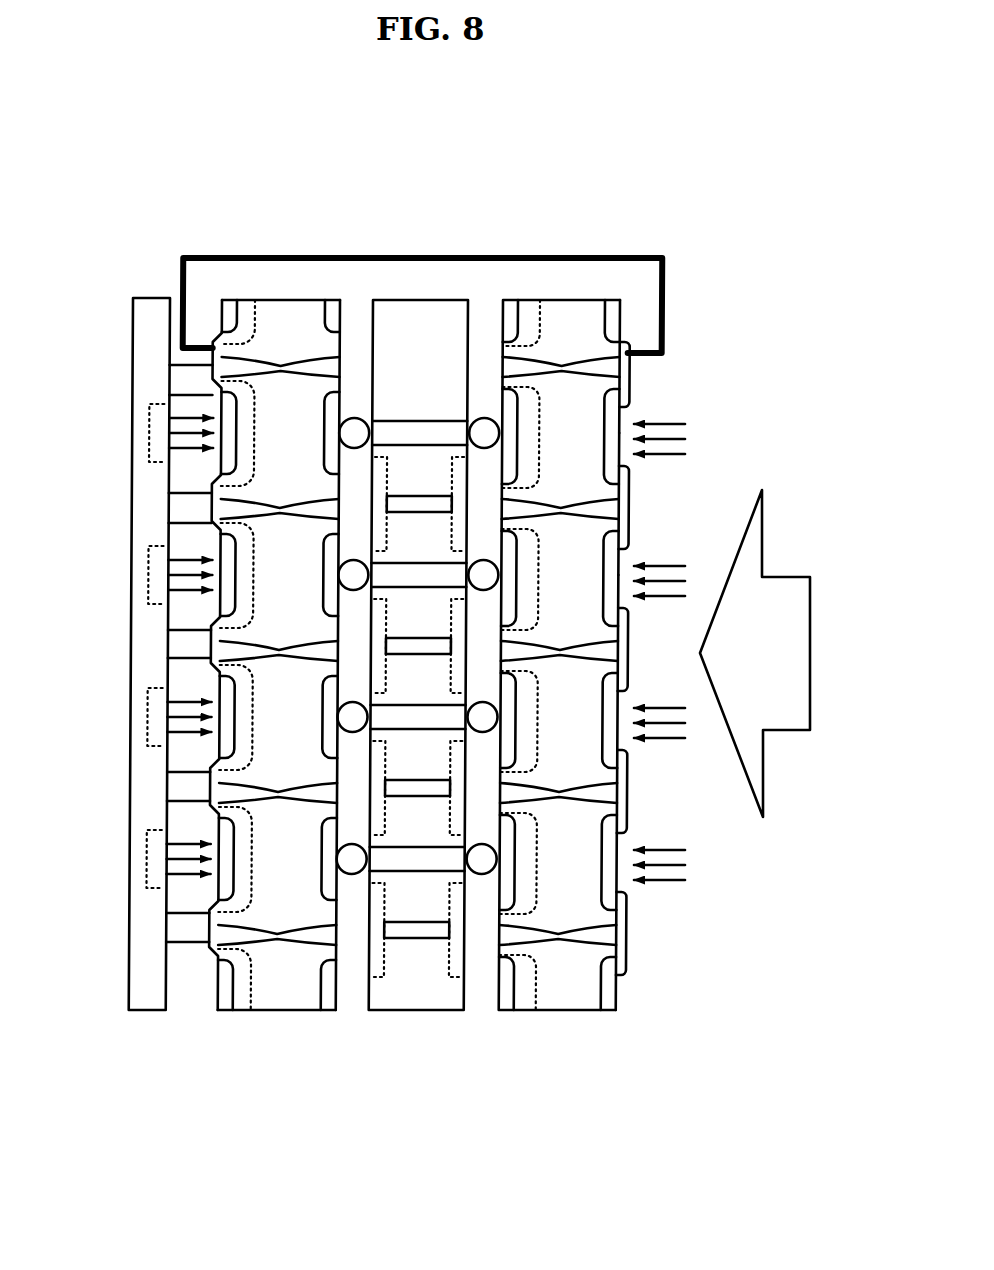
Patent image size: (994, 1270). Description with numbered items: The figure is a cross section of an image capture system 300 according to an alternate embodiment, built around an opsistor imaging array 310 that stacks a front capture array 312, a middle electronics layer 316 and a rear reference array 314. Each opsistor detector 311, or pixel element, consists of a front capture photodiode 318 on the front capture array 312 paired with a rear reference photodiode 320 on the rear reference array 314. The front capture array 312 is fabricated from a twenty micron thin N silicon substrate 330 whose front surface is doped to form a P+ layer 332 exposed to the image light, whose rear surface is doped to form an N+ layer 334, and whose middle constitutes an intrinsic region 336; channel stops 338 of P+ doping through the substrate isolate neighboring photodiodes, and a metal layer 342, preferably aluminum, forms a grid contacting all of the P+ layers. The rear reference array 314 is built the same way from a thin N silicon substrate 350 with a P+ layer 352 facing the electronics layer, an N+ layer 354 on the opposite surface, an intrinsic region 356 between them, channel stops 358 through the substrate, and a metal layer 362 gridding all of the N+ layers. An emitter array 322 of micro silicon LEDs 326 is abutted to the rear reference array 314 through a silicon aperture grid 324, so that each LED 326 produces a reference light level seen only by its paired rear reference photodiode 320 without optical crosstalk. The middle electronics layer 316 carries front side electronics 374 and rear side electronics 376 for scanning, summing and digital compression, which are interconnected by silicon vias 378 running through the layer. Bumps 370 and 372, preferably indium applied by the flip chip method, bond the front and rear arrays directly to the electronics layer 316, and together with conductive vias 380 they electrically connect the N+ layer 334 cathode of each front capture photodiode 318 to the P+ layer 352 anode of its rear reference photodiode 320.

The image capture system 300 is at (658, 226).
The opsistor imaging array 310 is at (430, 210).
The opsistor detector 311 is at (637, 430).
The front capture array 312 is at (528, 300).
The rear reference array 314 is at (322, 298).
The middle electronics layer 316 is at (408, 297).
The front capture photodiode 318 is at (563, 400).
The rear reference photodiode 320 is at (292, 392).
The emitter array 322 is at (148, 315).
The aperture grid 324 is at (180, 377).
The micro silicon LED 326 is at (160, 438).
The N silicon substrate 330 is at (570, 982).
The P+ layer 332 is at (628, 457).
The N+ layer 334 is at (628, 438).
The intrinsic region 336 is at (628, 415).
The channel stops 338 is at (600, 373).
The metal layer 342 is at (632, 375).
The N silicon substrate 350 is at (285, 972).
The P+ layer 352 is at (213, 418).
The N+ layer 354 is at (223, 413).
The intrinsic region 356 is at (248, 413).
The channel stops 358 is at (315, 367).
The metal layer 362 is at (214, 355).
The bumps 370 is at (488, 418).
The bumps 372 is at (357, 418).
The front side electronics 374 is at (462, 517).
The rear side electronics 376 is at (383, 538).
The silicon vias 378 is at (412, 507).
The conductive vias 380 is at (447, 430).